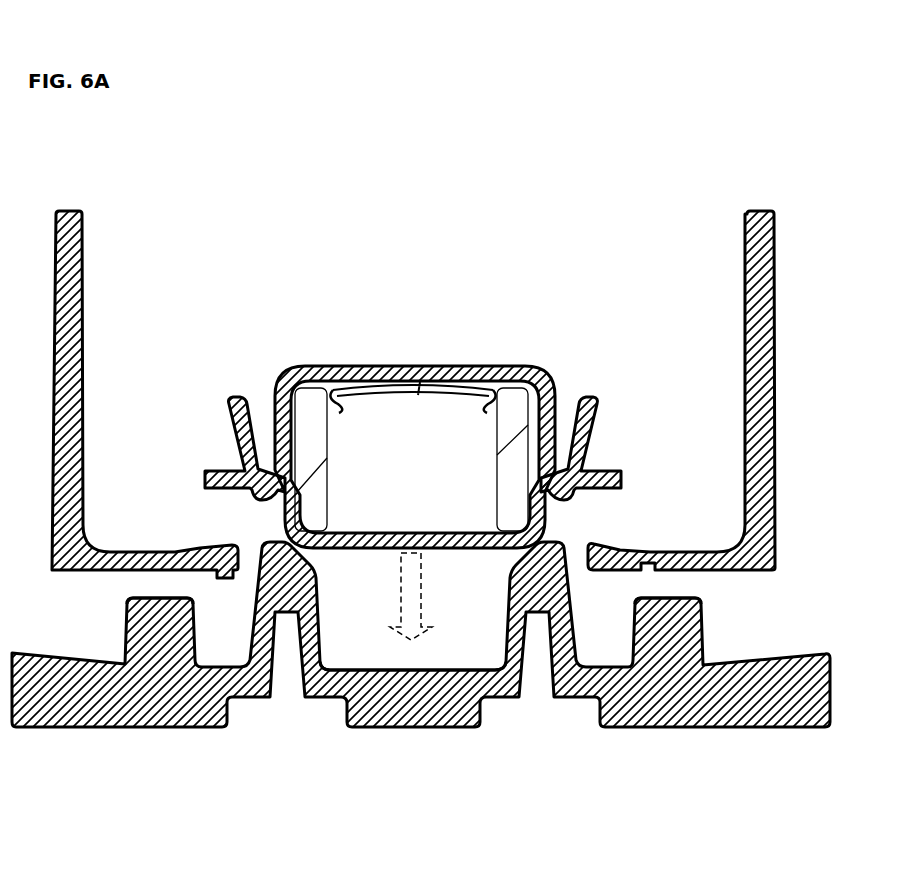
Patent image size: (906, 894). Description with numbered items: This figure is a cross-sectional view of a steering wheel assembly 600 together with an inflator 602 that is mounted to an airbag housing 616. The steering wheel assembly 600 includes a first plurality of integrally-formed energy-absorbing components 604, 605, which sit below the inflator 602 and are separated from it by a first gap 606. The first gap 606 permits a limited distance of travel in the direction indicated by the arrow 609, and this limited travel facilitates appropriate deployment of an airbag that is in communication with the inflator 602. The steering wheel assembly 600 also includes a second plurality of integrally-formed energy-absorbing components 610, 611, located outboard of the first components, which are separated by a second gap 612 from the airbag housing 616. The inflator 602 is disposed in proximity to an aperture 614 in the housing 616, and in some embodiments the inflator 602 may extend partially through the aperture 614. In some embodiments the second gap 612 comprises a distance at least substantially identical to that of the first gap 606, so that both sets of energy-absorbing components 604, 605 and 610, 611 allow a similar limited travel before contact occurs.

The steering wheel assembly 600 is at (156, 730).
The inflator 602 is at (432, 365).
The integrally-formed energy-absorbing component 604 is at (318, 645).
The integrally-formed energy-absorbing component 605 is at (503, 639).
The first gap 606 is at (318, 564).
The arrow 609 is at (421, 592).
The integrally-formed energy-absorbing component 610 is at (127, 628).
The integrally-formed energy-absorbing component 611 is at (700, 628).
The second gap 612 is at (122, 591).
The aperture 614 is at (256, 532).
The airbag housing 616 is at (85, 230).